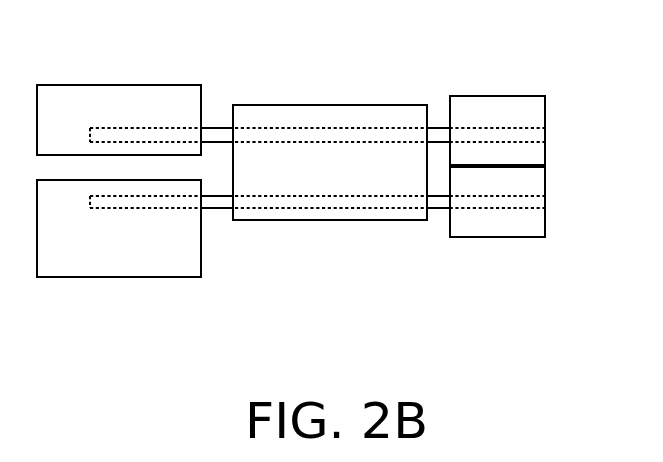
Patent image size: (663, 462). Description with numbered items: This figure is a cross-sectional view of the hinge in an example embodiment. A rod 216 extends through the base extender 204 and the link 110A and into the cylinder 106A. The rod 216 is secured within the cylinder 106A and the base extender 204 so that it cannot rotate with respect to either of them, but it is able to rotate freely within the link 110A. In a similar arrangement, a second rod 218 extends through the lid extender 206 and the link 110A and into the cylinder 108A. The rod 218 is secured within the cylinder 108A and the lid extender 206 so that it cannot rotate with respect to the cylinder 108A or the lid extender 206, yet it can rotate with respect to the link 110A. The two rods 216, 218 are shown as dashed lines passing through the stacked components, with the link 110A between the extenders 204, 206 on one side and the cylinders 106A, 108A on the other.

The lid extender 206 is at (133, 85).
The base extender 204 is at (143, 277).
The link 110A is at (315, 105).
The cylinder 108A is at (545, 115).
The cylinder 106A is at (545, 220).
The rod 218 is at (223, 128).
The rod 216 is at (143, 209).